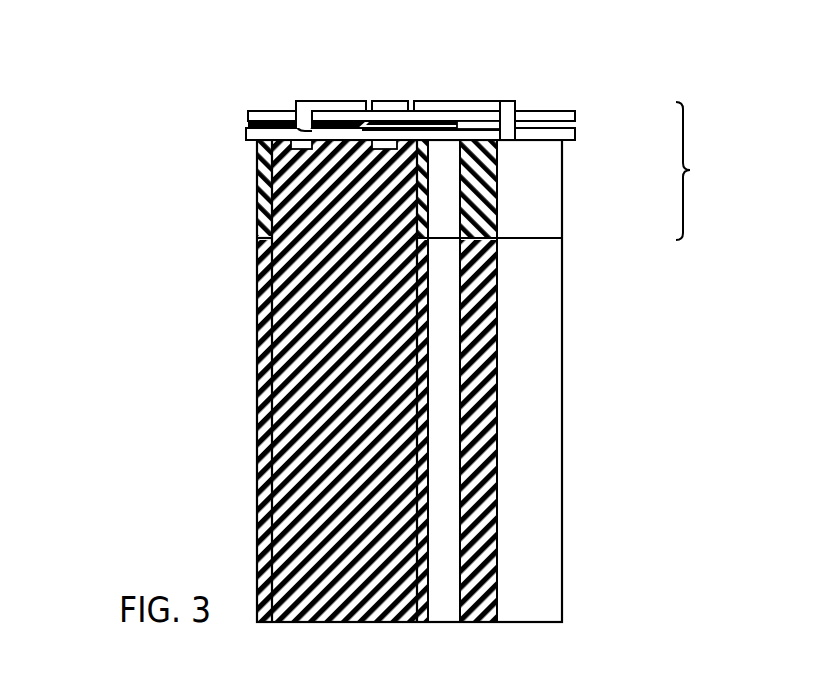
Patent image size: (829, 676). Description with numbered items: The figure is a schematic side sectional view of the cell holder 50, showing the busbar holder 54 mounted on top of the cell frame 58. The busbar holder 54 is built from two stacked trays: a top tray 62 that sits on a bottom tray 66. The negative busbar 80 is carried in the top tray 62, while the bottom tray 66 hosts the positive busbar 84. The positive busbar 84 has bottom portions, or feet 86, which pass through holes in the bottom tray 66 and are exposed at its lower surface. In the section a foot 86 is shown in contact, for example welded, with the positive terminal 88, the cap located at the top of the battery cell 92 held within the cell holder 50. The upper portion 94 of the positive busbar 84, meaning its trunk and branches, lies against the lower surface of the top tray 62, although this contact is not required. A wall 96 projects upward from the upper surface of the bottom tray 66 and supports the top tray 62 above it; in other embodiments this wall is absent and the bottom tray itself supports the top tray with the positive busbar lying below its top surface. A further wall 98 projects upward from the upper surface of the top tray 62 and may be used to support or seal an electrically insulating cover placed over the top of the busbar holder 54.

The cell holder 50 is at (96, 71).
The busbar holder 54 is at (705, 171).
The cell frame 58 is at (565, 301).
The top tray 62 is at (564, 110).
The bottom tray 66 is at (576, 135).
The negative busbar 80 is at (382, 100).
The positive busbar 84 is at (357, 129).
The foot 86 is at (337, 126).
The positive terminal 88 is at (309, 104).
The battery cell 92 is at (349, 623).
The upper portion 94 is at (418, 117).
The wall 96 is at (283, 123).
The wall 98 is at (509, 100).